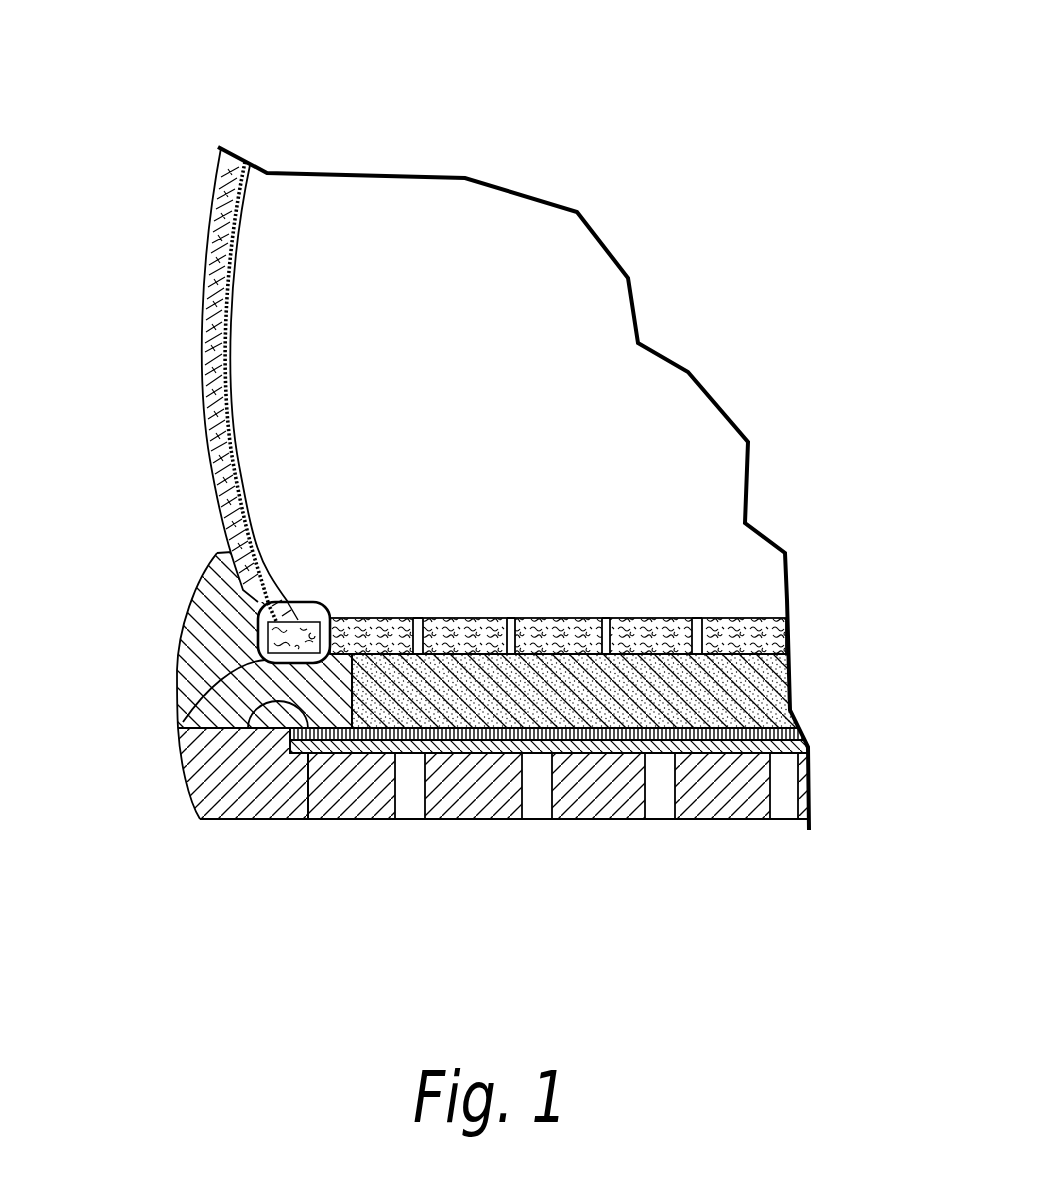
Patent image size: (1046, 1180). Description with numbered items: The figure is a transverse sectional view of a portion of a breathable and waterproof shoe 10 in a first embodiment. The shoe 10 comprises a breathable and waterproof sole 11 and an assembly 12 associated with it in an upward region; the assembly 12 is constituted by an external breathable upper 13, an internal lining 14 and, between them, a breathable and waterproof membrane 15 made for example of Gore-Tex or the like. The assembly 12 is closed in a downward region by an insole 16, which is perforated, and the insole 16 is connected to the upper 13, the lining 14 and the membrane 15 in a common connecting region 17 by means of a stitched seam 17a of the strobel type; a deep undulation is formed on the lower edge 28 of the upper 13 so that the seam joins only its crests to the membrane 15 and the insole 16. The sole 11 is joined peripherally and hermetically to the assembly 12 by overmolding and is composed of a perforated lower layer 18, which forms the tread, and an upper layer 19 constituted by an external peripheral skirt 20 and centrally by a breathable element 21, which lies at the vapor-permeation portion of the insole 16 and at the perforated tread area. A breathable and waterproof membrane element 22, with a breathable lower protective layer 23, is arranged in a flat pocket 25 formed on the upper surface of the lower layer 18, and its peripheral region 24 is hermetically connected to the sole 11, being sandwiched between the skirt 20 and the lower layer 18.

The shoe 10 is at (552, 137).
The breathable and waterproof sole 11 is at (716, 835).
The assembly 12 is at (283, 336).
The external breathable upper 13 is at (220, 168).
The internal lining 14 is at (250, 180).
The breathable and waterproof membrane 15 is at (237, 285).
The insole 16 is at (655, 633).
The common connecting region 17 is at (248, 614).
The stitched seam 17a is at (190, 722).
The perforated lower layer 18 is at (592, 801).
The upper layer 19 is at (197, 650).
The external peripheral skirt 20 is at (213, 628).
The breathable element 21 is at (787, 683).
The breathable and waterproof membrane element 22 is at (362, 750).
The breathable lower protective layer 23 is at (468, 750).
The peripheral region 24 is at (205, 787).
The flat pocket 25 is at (291, 813).
The lower edge 28 is at (375, 418).